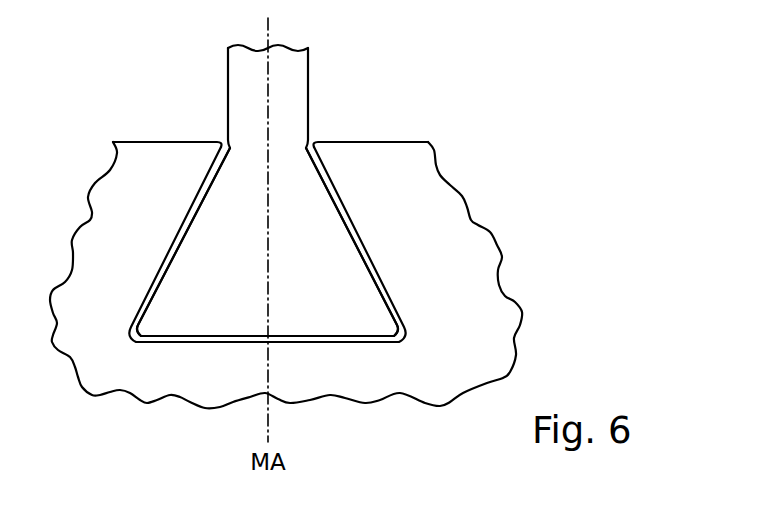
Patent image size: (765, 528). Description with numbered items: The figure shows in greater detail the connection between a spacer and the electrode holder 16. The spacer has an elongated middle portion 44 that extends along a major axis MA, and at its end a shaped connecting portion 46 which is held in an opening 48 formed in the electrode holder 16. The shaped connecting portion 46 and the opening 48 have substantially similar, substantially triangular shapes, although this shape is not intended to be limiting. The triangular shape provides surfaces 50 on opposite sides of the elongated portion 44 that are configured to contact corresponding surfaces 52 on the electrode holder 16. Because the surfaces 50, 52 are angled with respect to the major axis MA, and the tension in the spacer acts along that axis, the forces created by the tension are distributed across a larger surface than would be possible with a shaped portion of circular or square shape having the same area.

The electrode holder 16 is at (478, 253).
The elongated middle portion 44 is at (292, 98).
The shaped connecting portion 46 is at (292, 277).
The opening 48 is at (425, 293).
The surface 50 is at (140, 303).
The surface 52 is at (153, 275).